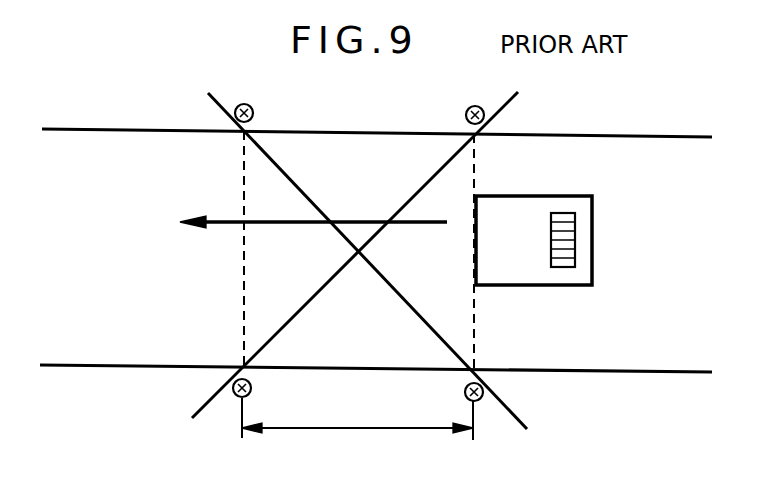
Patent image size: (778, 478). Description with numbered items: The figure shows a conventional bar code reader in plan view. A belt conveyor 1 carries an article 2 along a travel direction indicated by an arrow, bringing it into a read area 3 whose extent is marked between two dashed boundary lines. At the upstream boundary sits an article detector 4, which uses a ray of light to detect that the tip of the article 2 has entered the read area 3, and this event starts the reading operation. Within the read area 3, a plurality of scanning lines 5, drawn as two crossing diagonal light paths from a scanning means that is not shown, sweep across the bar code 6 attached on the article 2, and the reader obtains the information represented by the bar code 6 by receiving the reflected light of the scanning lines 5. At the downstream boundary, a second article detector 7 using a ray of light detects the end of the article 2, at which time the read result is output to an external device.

The belt conveyor 1 is at (114, 356).
The article 2 is at (520, 210).
The read area 3 is at (358, 285).
The article detector 4 is at (469, 107).
The scanning lines 5 is at (208, 97).
The bar code 6 is at (576, 246).
The article detector 7 is at (253, 106).